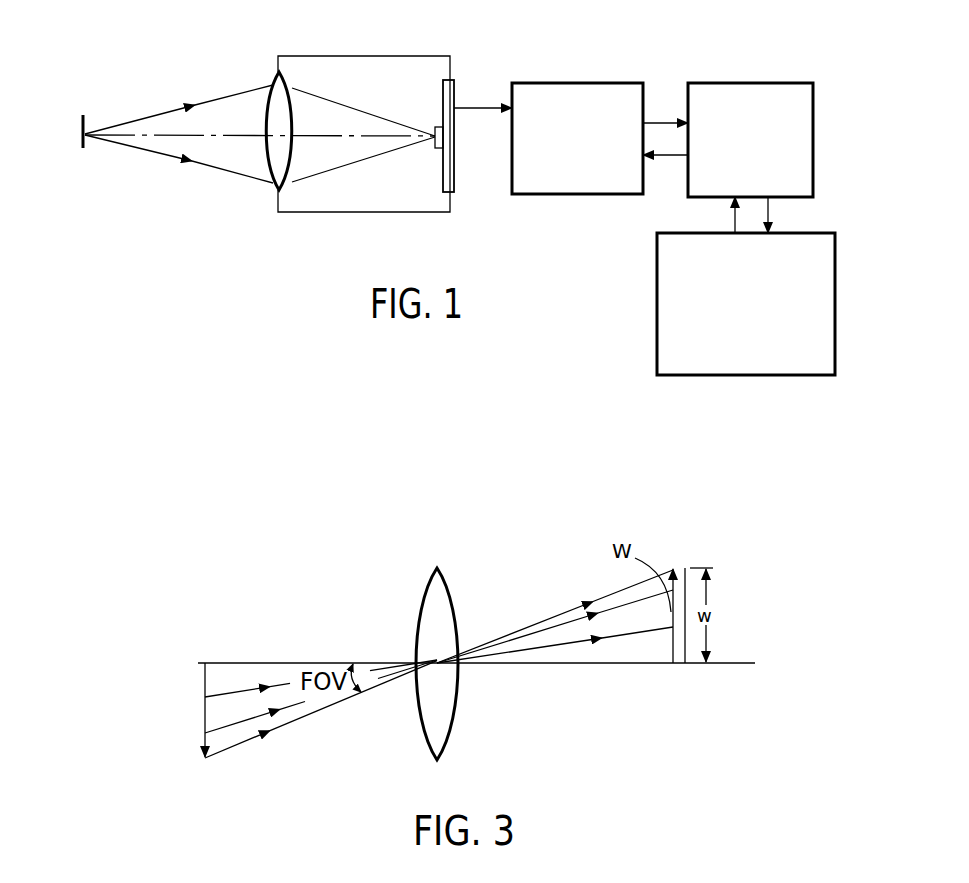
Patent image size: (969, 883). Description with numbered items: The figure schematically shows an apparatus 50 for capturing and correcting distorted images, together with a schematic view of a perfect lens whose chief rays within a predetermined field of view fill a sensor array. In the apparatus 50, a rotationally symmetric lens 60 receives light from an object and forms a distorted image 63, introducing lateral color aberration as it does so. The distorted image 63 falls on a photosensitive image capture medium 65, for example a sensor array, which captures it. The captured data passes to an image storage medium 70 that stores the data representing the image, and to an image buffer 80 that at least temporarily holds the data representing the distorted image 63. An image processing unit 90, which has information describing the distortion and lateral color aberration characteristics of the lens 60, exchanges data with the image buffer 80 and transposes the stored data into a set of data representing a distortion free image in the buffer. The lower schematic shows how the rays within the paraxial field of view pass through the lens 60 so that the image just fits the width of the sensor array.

The apparatus 50 is at (233, 60).
The lens 60 is at (275, 78).
The distorted image 63 is at (435, 130).
The photosensitive image capture medium 65 is at (455, 87).
The image storage medium 70 is at (562, 82).
The image buffer 80 is at (742, 83).
The image processing unit 90 is at (837, 278).